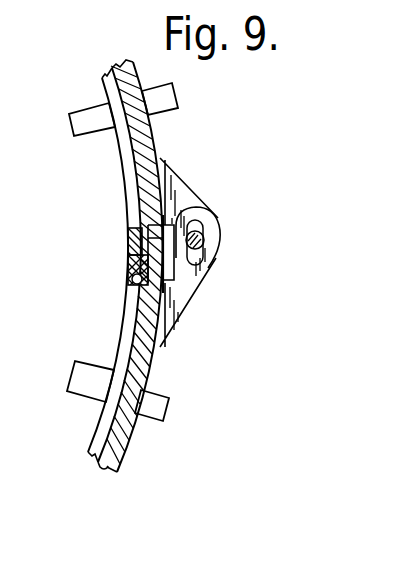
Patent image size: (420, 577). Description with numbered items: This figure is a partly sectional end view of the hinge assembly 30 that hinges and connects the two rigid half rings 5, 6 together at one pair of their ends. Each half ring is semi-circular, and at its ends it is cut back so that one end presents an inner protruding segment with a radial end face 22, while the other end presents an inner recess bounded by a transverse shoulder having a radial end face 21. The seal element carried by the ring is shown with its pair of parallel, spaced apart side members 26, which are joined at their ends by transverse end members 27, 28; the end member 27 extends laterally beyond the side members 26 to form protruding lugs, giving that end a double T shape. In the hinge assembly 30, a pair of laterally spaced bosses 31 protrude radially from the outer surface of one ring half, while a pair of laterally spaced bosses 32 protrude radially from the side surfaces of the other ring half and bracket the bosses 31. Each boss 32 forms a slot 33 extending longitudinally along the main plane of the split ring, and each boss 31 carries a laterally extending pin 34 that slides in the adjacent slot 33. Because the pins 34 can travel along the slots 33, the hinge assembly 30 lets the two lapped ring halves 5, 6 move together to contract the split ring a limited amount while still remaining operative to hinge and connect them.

The half ring 5 is at (150, 138).
The half ring 6 is at (104, 468).
The side members 26 is at (122, 157).
The end member 28 is at (128, 232).
The radial end face 22 is at (128, 258).
The end member 27 is at (131, 278).
The radial end face 21 is at (150, 291).
The hinge assembly 30 is at (257, 158).
The bosses 31 is at (183, 185).
The bosses 32 is at (192, 293).
The slot 33 is at (195, 212).
The pin 34 is at (200, 240).